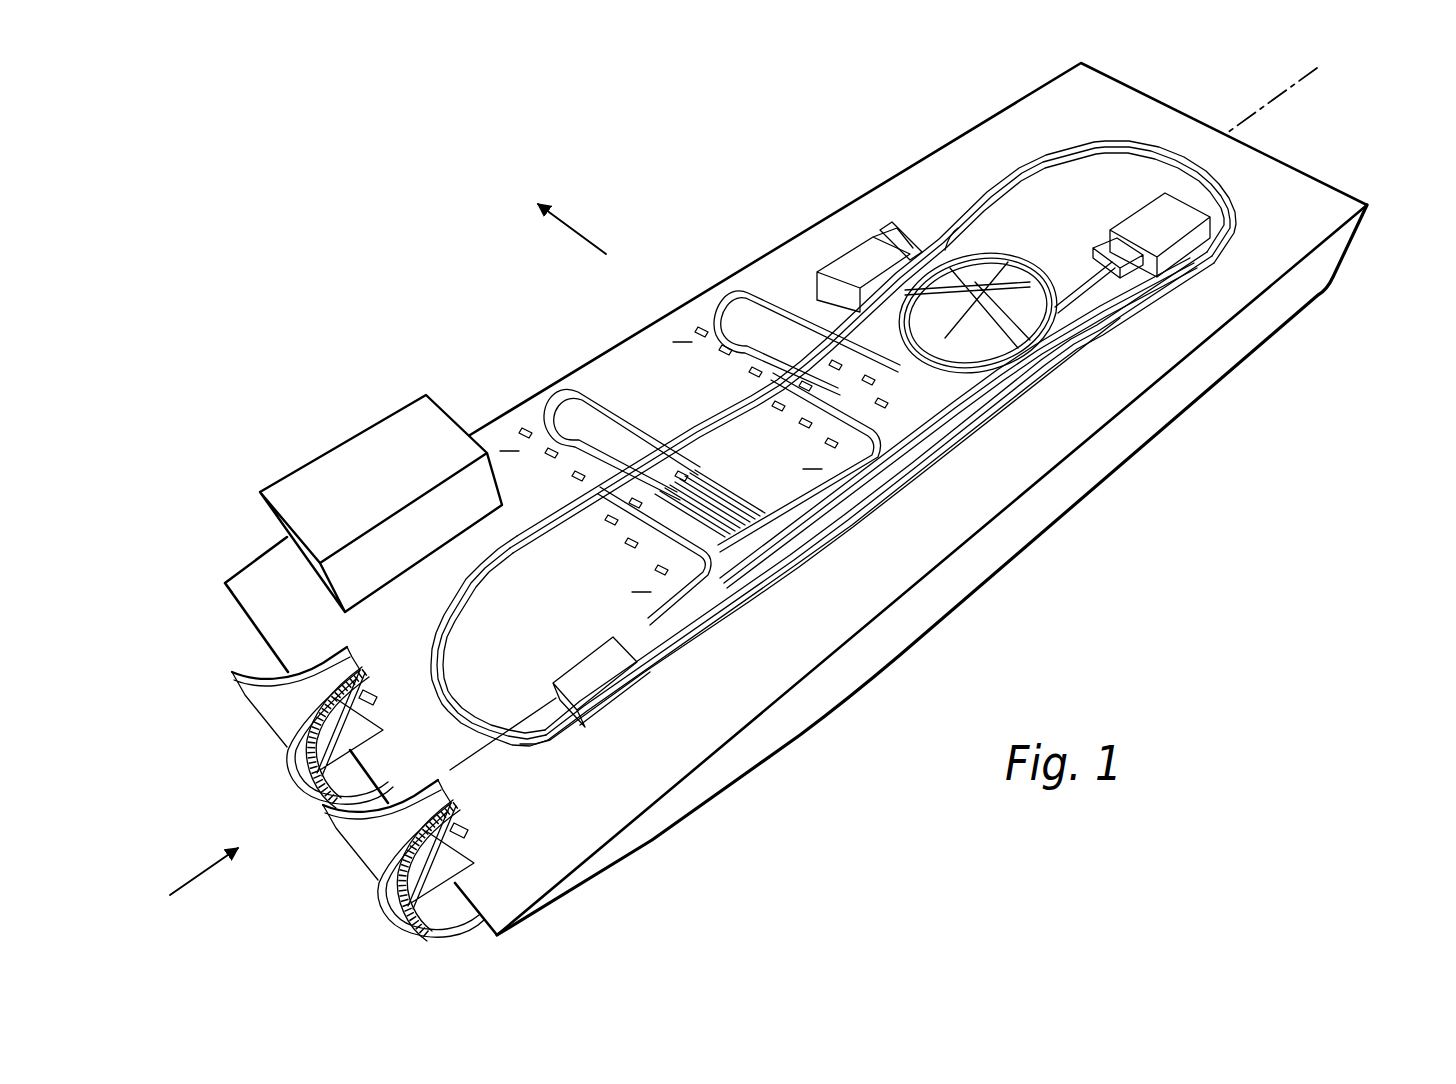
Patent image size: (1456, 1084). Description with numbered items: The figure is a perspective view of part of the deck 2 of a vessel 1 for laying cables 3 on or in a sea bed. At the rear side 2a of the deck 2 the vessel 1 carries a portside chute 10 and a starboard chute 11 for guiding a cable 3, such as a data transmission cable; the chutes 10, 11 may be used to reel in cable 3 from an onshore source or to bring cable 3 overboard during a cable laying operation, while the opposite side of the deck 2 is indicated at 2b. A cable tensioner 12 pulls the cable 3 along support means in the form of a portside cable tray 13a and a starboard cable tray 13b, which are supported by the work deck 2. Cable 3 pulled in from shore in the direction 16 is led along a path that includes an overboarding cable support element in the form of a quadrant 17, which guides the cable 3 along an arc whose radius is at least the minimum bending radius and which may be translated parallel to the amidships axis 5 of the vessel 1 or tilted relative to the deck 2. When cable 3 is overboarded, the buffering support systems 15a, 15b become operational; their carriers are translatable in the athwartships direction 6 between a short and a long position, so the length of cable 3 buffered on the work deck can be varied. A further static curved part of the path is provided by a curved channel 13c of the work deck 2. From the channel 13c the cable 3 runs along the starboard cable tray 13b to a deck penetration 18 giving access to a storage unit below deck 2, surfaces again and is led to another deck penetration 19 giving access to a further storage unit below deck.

The vessel 1 is at (305, 322).
The deck 2 is at (250, 583).
The rear side of the deck 2a is at (232, 607).
The heel end of sole 2b is at (1362, 242).
The cable 3 is at (578, 392).
The amidships axis 5 is at (1280, 90).
The athwartships direction 6 is at (583, 232).
The portside chute 10 is at (267, 703).
The starboard chute 11 is at (363, 830).
The cable tensioner 12 is at (593, 677).
The portside cable tray 13a is at (697, 412).
The starboard cable tray 13b is at (850, 527).
The curved channel 13c is at (533, 745).
The buffering support system 15a is at (540, 383).
The buffering support system 15b is at (710, 282).
The direction 16 is at (193, 873).
The quadrant 17 is at (963, 317).
The deck penetration 18 is at (1158, 227).
The deck penetration 19 is at (857, 273).